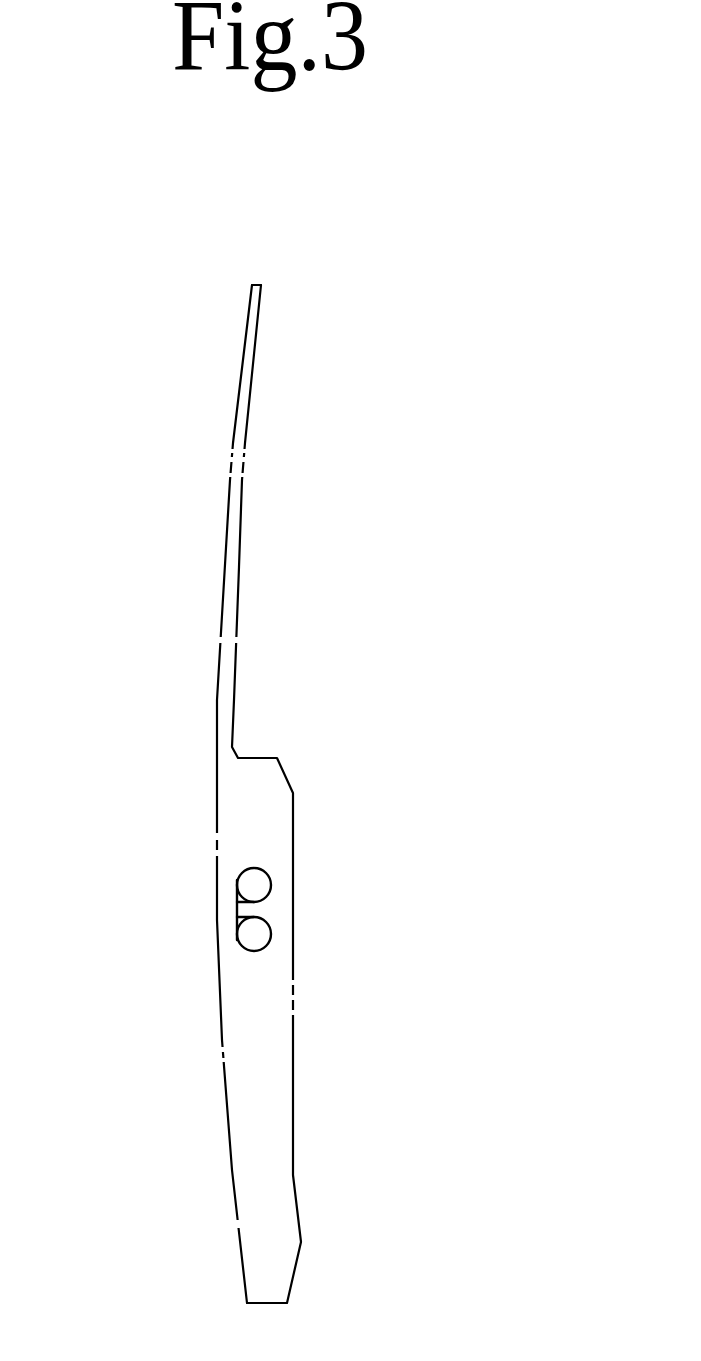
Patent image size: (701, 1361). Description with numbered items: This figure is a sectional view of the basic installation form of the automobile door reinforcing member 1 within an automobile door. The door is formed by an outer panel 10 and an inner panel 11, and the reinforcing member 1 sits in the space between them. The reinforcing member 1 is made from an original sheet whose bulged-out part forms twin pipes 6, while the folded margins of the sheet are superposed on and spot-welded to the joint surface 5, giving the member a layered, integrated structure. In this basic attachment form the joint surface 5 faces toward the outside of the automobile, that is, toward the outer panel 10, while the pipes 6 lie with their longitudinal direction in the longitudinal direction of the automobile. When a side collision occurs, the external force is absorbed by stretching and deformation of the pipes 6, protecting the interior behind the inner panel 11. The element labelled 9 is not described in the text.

The automobile door reinforcing member 1 is at (264, 903).
The joint surface 5 is at (237, 896).
The pipes 6 is at (268, 875).
The blade body 9 is at (277, 794).
The outer panel 10 is at (224, 1072).
The inner panel 11 is at (295, 1073).